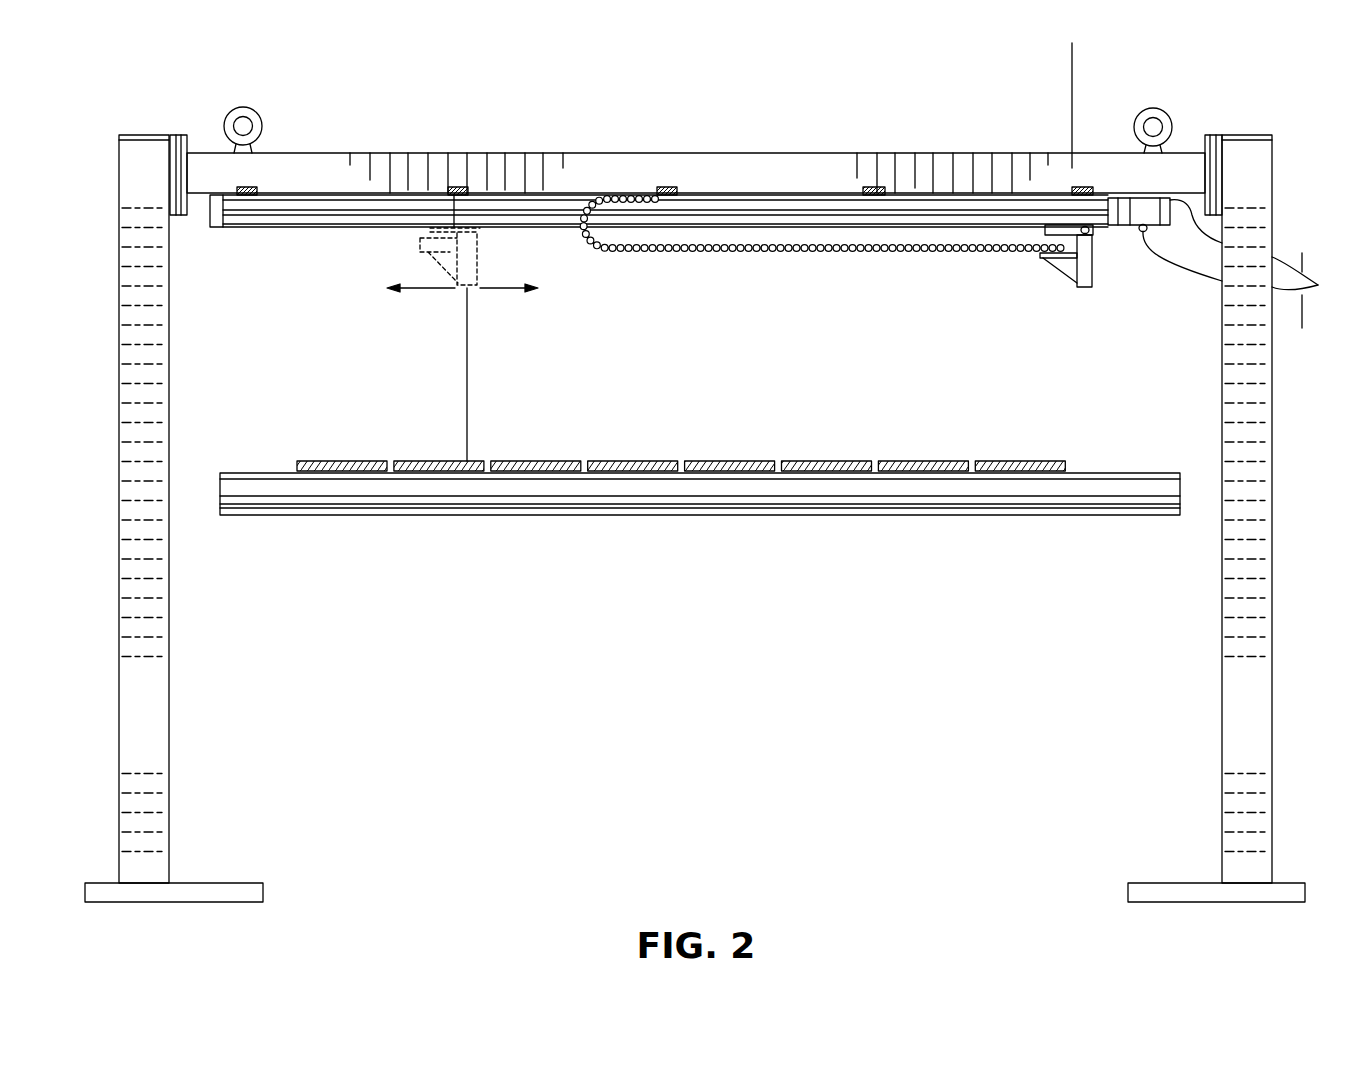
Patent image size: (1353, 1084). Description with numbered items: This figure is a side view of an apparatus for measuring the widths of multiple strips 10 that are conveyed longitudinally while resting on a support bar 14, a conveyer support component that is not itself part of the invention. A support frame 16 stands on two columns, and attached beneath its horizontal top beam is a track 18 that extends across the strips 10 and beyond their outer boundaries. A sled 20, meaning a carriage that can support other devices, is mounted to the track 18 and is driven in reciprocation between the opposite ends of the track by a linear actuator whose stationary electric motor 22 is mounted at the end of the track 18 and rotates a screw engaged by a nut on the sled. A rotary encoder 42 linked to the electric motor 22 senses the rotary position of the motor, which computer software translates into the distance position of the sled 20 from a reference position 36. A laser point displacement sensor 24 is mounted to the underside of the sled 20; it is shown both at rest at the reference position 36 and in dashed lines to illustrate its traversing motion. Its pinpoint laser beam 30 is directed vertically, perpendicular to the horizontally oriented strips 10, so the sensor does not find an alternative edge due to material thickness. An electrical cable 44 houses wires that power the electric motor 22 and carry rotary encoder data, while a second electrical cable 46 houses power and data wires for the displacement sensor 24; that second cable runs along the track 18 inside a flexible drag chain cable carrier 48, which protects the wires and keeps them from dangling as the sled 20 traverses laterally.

The strips 10 is at (345, 471).
The support bar 14 is at (592, 488).
The support frame 16 is at (791, 165).
The track 18 is at (318, 208).
The sled 20 is at (453, 190).
The electric motor 22 is at (1140, 210).
The laser point displacement sensor 24 is at (458, 280).
The laser beam 30 is at (467, 345).
The reference position 36 is at (1072, 67).
The rotary encoder 42 is at (1178, 195).
The electrical cable 44 is at (1290, 292).
The second electrical cable 46 is at (1292, 258).
The drag chain cable carrier 48 is at (835, 254).